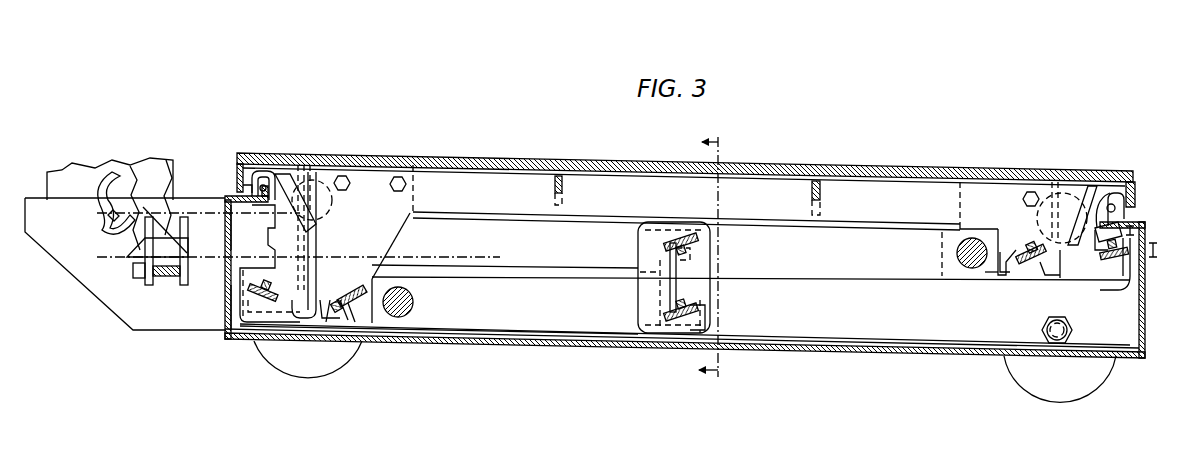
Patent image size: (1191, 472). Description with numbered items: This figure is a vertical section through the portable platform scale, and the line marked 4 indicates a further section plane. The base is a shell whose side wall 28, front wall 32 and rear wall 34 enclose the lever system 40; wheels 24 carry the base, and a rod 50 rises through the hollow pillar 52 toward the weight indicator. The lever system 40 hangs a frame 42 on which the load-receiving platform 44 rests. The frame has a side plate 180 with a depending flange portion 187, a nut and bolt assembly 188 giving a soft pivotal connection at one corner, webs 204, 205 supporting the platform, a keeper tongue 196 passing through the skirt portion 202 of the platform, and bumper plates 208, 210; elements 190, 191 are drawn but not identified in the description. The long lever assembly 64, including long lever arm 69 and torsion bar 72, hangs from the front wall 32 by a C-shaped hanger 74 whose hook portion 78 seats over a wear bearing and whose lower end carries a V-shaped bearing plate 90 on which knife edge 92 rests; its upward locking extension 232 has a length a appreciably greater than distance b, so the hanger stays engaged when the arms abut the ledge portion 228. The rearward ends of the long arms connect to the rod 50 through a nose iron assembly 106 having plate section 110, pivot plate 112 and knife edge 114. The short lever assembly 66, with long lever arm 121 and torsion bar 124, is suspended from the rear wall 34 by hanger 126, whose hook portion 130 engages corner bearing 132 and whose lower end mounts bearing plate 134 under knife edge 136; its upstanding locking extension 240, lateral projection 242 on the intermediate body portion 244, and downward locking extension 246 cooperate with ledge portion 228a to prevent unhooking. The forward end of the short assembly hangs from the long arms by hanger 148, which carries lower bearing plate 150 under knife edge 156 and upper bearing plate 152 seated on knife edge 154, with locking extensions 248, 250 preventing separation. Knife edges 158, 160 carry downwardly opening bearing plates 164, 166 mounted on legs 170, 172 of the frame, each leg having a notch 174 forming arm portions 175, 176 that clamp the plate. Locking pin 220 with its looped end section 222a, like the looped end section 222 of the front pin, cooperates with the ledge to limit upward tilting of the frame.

The section line 4- 4 is at (721, 257).
The wheels 24 is at (364, 358).
The side wall 28 is at (916, 320).
The front wall 32 is at (1146, 322).
The rear wall 34 is at (232, 242).
The lever system 40 is at (625, 340).
The frame 42 is at (845, 176).
The load-receiving platform 44 is at (812, 178).
The rod 50 is at (97, 207).
The pillar 52 is at (163, 185).
The long lever assembly 64 is at (523, 279).
The short lever assembly 66 is at (558, 339).
The long lever arm 69 is at (848, 282).
The torsion bar 72 is at (968, 270).
The hanger 74 is at (1064, 280).
The hook portion 78 is at (1124, 197).
The bearing plate 90 is at (1117, 272).
The knife edge 92 is at (1099, 252).
The nose iron assembly 106 is at (127, 281).
The plate section 110 is at (125, 261).
The pivot plate 112 is at (150, 282).
The knife edge 114 is at (115, 222).
The long lever arm 121 is at (593, 338).
The torsion bar 124 is at (415, 300).
The hanger 126 is at (317, 245).
The hook portion 130 is at (258, 171).
The corner bearing 132 is at (290, 173).
The bearing plate 134 is at (274, 308).
The knife edge 136 is at (271, 291).
The hanger 148 is at (637, 258).
The bearing plate 150 is at (706, 321).
The bearing plate 152 is at (700, 244).
The knife edge 154 is at (688, 277).
The knife edge 156 is at (697, 305).
The knife edge 158 is at (1024, 273).
The knife edge 160 is at (343, 318).
The bearing plate 164 is at (1009, 262).
The bearing plate 166 is at (325, 278).
The leg 170 is at (995, 275).
The leg 172 is at (395, 245).
The notch 174 is at (1040, 264).
The arm portion 175 is at (333, 318).
The arm portion 176 is at (368, 311).
The side plate 180 is at (892, 171).
The flange portion 187 is at (498, 216).
The nut and bolt assembly 188 is at (1028, 193).
The nut 190 is at (348, 177).
The nut 191 is at (404, 179).
The keeper tongue 196 is at (238, 172).
The skirt portion 202 is at (240, 185).
The web 204 is at (565, 184).
The web 205 is at (823, 196).
The bumper plate 208 is at (1113, 176).
The bumper plate 210 is at (272, 175).
The locking pin 220 is at (296, 245).
The looped end section 222 is at (1045, 226).
The looped end section 222a is at (330, 205).
The ledge portion 228 is at (1120, 223).
The ledge portion 228a is at (248, 194).
The locking extension 232 is at (1146, 290).
The locking extension 240 is at (230, 287).
The lateral projection 242 is at (231, 226).
The intermediate body portion 244 is at (318, 258).
The locking extension 246 is at (236, 186).
The locking extension 248 is at (698, 266).
The locking extension 250 is at (667, 298).
The length a is at (1158, 255).
The distance b is at (1136, 233).